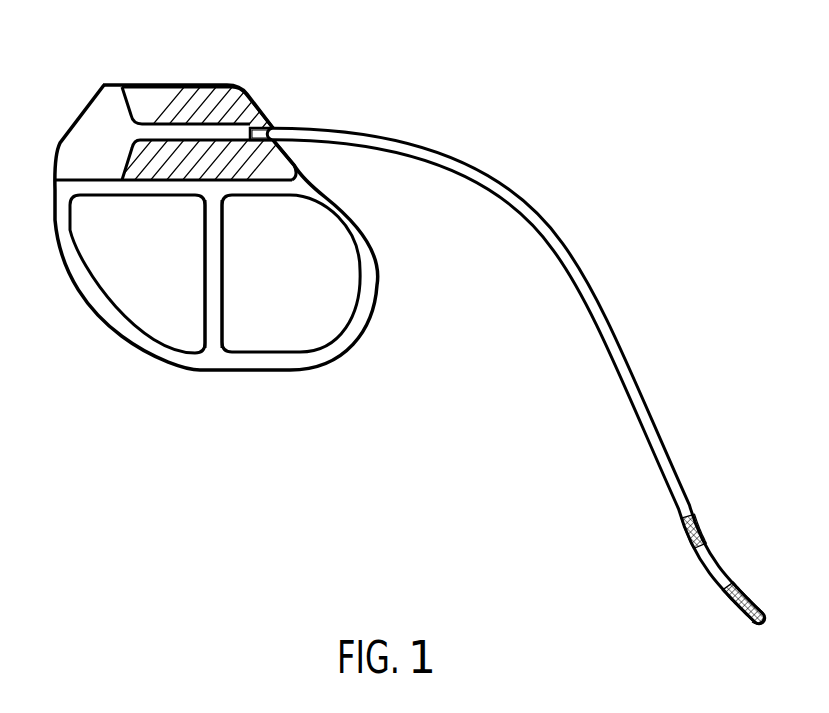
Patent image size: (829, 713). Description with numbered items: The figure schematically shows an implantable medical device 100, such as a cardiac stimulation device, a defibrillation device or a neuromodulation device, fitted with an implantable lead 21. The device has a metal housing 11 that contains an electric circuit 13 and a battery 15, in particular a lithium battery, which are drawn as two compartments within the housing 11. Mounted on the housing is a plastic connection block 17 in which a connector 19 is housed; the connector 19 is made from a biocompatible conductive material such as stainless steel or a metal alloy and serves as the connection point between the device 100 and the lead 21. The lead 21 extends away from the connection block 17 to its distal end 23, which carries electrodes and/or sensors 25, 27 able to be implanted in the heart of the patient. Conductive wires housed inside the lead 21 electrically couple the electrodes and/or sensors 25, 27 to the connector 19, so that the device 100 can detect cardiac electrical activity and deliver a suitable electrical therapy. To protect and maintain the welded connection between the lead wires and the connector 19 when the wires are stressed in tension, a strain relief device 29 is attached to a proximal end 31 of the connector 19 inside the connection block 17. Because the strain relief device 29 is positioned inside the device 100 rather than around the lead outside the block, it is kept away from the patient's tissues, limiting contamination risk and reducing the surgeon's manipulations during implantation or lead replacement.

The implantable medical device 100 is at (103, 443).
The metal housing 11 is at (217, 360).
The electric circuit 13 is at (303, 327).
The battery 15 is at (122, 293).
The connection block 17 is at (165, 97).
The connector 19 is at (213, 133).
The implantable lead 21 is at (558, 240).
The distal end 23 is at (755, 610).
The electrode and/or sensor 25 is at (737, 613).
The electrode and/or sensor 27 is at (682, 535).
The strain relief device 29 is at (275, 128).
The proximal end 31 is at (251, 125).